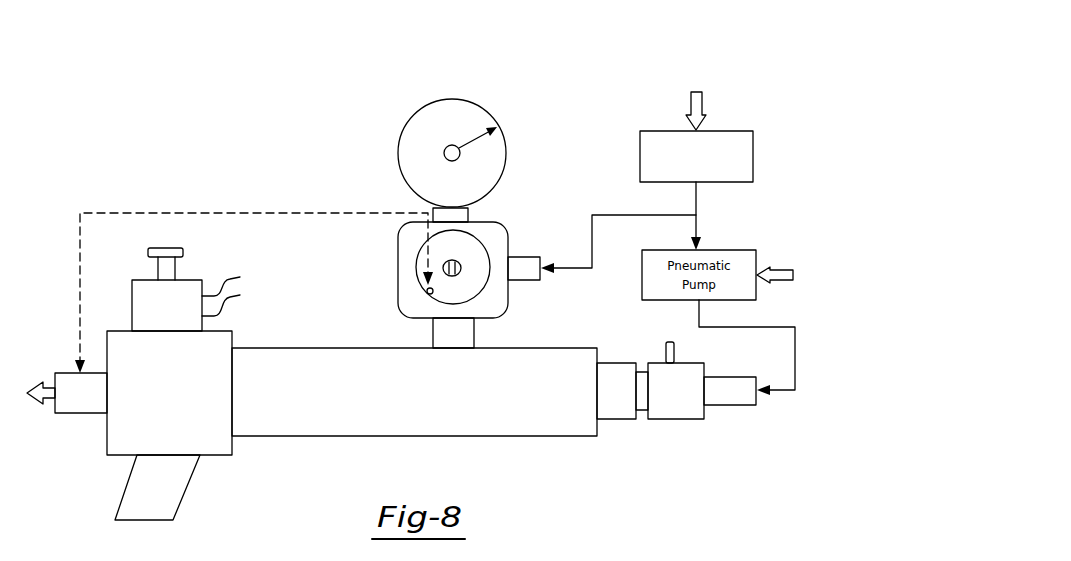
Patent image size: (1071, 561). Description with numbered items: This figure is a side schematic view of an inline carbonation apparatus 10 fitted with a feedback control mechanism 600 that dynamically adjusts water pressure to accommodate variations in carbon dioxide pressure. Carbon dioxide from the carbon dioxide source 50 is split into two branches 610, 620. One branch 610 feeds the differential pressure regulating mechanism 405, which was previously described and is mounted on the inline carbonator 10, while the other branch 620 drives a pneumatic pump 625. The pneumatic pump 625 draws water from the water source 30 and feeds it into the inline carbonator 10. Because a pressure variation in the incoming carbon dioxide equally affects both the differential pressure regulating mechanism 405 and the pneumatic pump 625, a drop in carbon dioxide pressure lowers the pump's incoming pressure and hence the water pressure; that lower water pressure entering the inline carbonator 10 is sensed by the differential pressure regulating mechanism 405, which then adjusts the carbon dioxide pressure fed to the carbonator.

The feedback control mechanism 600 is at (153, 162).
The inline carbonation apparatus 10 is at (543, 334).
The differential pressure regulator 405 is at (398, 257).
The branch 610 is at (602, 214).
The carbon dioxide source 50 is at (703, 106).
The branch 620 is at (698, 224).
The water source 30 is at (783, 266).
The pneumatic pump 625 is at (756, 291).